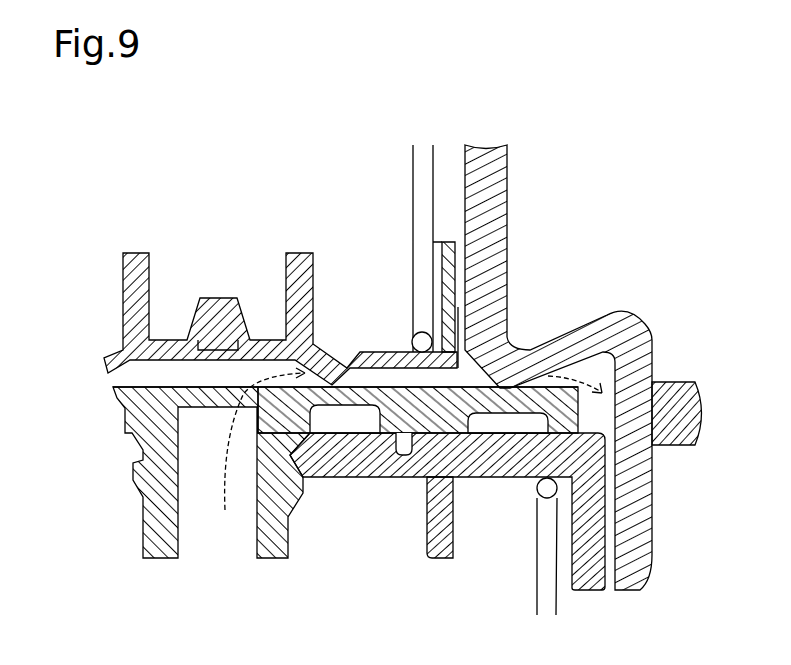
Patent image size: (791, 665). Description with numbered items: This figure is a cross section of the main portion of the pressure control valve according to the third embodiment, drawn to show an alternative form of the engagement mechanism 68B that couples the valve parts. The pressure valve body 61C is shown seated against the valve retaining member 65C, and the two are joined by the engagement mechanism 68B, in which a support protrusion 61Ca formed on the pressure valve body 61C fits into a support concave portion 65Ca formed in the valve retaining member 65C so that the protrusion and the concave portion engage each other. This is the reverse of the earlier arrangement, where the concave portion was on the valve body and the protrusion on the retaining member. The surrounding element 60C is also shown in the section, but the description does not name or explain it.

The housing 60C is at (113, 424).
The pressure valve body 61C is at (578, 413).
The support protrusion 61Ca is at (378, 478).
The valve retaining member 65C is at (605, 477).
The support concave portion 65Ca is at (411, 457).
The engagement mechanism 68B is at (453, 594).